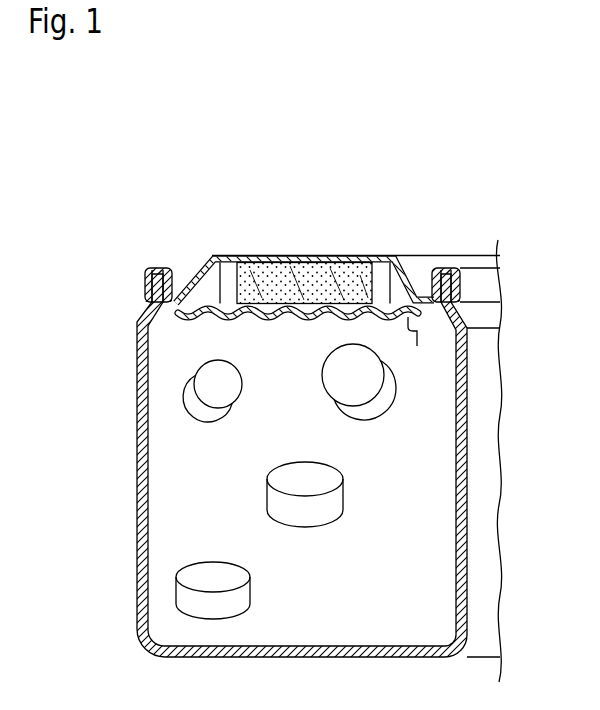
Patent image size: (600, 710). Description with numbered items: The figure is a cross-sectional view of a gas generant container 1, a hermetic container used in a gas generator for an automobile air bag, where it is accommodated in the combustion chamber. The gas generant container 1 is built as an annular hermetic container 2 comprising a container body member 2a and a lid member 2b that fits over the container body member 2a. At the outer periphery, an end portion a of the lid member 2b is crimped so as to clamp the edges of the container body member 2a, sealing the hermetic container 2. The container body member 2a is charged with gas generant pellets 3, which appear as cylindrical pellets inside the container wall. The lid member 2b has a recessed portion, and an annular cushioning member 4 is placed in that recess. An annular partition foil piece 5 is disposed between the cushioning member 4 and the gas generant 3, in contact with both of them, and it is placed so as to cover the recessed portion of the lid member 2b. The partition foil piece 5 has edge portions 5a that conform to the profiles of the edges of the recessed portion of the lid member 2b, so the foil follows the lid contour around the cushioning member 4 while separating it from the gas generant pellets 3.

The gas generant container 1 is at (181, 212).
The hermetic container 2 is at (251, 463).
The container body member 2a is at (137, 522).
The lid member 2b is at (290, 256).
The gas generant pellets 3 is at (200, 380).
The cushioning member 4 is at (353, 256).
The partition foil piece 5 is at (222, 261).
The edge portions 5a is at (417, 334).
The end portion a is at (132, 283).